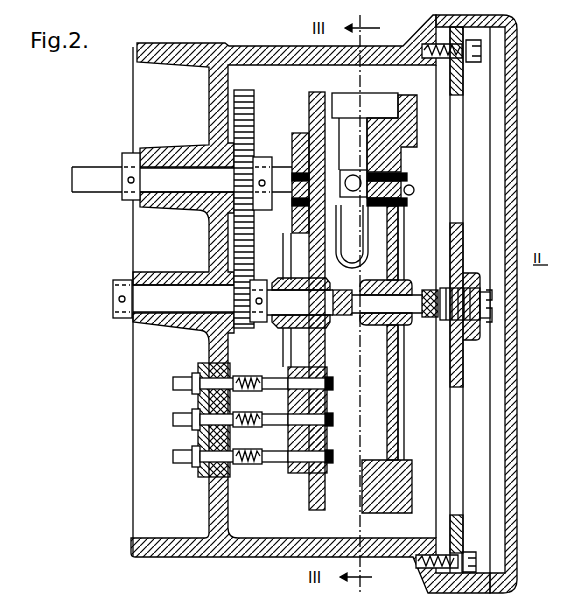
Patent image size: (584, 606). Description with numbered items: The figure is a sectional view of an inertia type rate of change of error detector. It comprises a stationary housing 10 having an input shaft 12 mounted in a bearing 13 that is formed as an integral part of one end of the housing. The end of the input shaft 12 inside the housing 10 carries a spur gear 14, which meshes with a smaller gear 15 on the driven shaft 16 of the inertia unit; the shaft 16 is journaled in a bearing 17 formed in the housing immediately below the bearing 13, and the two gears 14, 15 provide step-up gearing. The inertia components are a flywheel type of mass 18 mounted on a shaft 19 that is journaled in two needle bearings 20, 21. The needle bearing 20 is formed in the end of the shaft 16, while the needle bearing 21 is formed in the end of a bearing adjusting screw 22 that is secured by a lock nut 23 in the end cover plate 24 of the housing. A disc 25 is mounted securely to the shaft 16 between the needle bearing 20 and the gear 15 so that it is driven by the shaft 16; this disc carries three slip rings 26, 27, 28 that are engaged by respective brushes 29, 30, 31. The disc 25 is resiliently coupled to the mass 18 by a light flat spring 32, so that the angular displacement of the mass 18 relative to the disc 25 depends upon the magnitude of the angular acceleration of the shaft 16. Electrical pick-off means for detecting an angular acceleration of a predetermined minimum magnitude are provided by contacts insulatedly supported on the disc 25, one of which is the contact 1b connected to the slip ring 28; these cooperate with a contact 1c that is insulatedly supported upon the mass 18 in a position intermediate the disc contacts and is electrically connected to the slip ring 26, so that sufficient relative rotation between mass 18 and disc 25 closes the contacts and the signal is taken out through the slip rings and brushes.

The stationary housing 10 is at (173, 42).
The input shaft 12 is at (86, 167).
The bearing 13 is at (187, 148).
The spur gear 14 is at (252, 93).
The smaller gear 15 is at (250, 328).
The driven shaft 16 is at (113, 297).
The bearing 17 is at (178, 334).
The flywheel type mass 18 is at (404, 228).
The shaft 19 is at (405, 278).
The needle bearing 20 is at (338, 318).
The needle bearing 21 is at (430, 323).
The bearing adjusting screw 22 is at (493, 317).
The lock nut 23 is at (480, 281).
The end cover plate 24 is at (462, 252).
The disc 25 is at (309, 103).
The slip ring 26 is at (290, 367).
The slip ring 27 is at (294, 444).
The slip ring 28 is at (300, 473).
The brush 29 is at (282, 378).
The brush 30 is at (278, 414).
The brush 31 is at (272, 466).
The light flat spring 32 is at (380, 93).
The contact 1b is at (376, 162).
The contact 1c is at (353, 174).